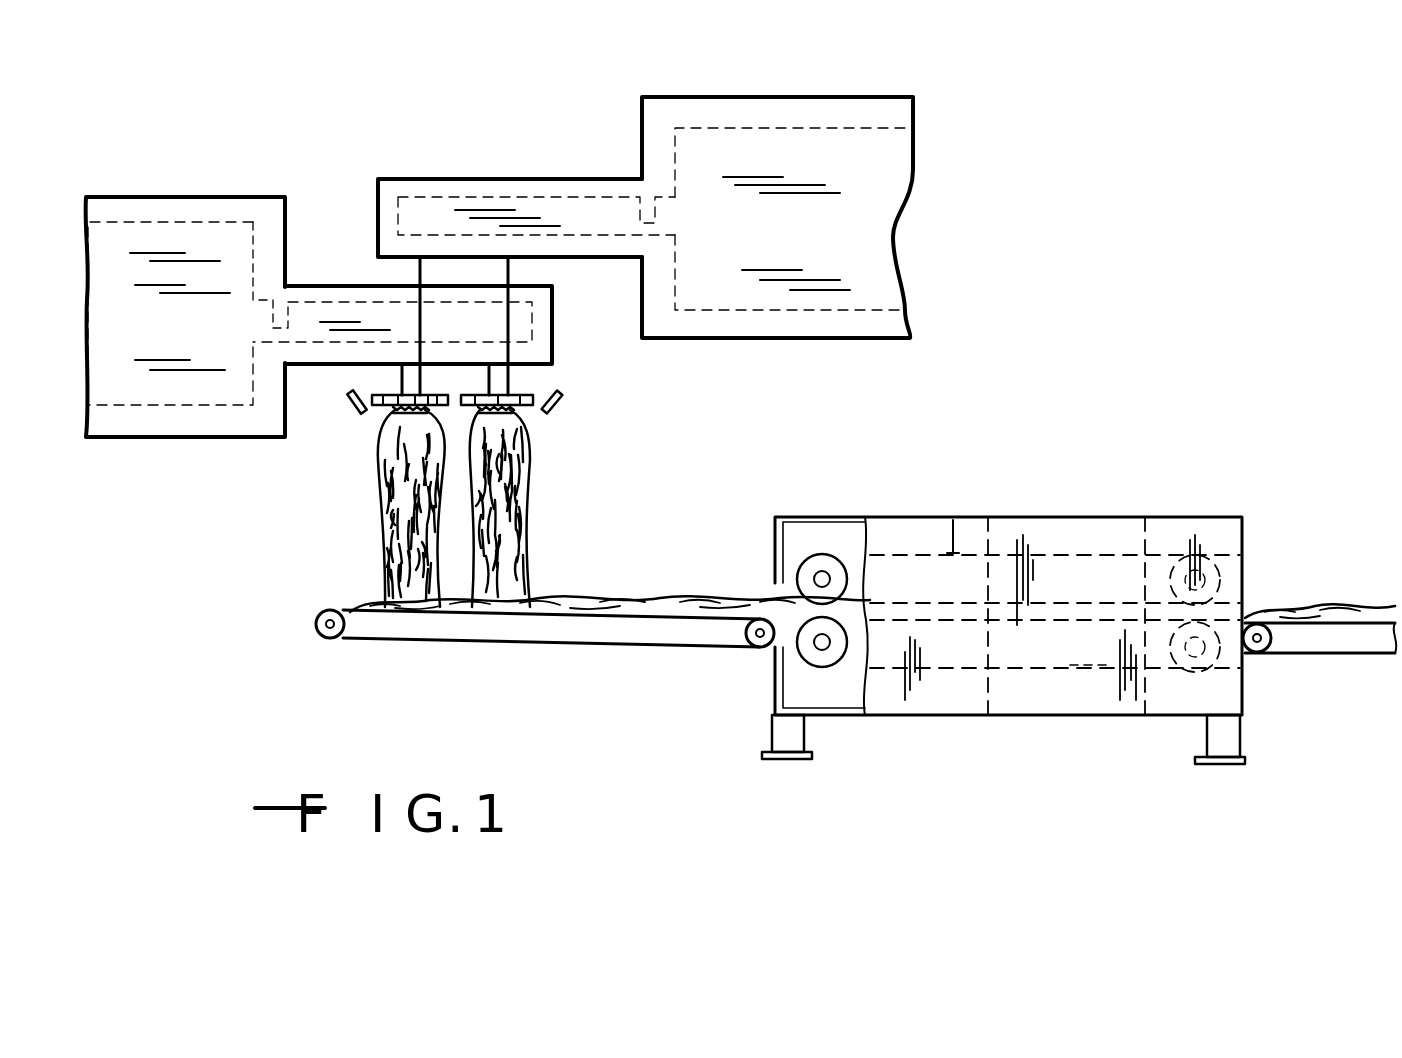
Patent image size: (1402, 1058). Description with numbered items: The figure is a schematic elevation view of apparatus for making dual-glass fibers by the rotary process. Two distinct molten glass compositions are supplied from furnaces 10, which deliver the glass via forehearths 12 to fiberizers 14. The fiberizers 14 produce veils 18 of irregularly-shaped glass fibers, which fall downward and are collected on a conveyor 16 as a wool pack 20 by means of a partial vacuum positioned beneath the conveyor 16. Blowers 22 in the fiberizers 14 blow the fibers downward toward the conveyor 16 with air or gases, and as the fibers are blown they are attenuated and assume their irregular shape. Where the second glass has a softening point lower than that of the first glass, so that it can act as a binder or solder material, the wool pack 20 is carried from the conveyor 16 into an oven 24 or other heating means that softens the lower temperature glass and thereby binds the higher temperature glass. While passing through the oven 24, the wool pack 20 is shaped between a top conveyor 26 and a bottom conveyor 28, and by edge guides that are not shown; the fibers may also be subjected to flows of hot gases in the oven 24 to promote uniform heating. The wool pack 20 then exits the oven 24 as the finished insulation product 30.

The furnace 10 is at (160, 197).
The forehearth 12 is at (495, 179).
The fiberizer 14 is at (398, 408).
The conveyor 16 is at (348, 613).
The veil 18 is at (387, 524).
The wool pack 20 is at (603, 594).
The blower 22 is at (345, 401).
The oven 24 is at (1055, 517).
The top conveyor 26 is at (939, 600).
The bottom conveyor 28 is at (1080, 623).
The insulation product 30 is at (1295, 602).